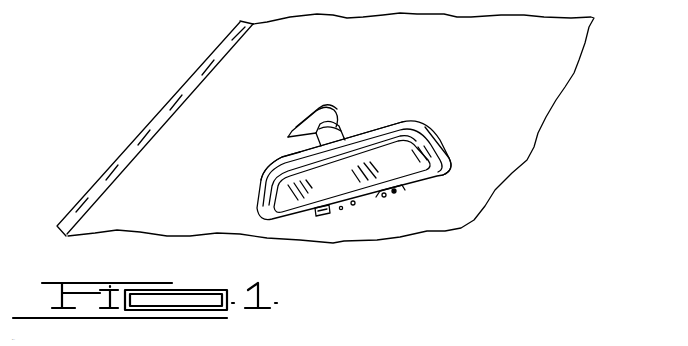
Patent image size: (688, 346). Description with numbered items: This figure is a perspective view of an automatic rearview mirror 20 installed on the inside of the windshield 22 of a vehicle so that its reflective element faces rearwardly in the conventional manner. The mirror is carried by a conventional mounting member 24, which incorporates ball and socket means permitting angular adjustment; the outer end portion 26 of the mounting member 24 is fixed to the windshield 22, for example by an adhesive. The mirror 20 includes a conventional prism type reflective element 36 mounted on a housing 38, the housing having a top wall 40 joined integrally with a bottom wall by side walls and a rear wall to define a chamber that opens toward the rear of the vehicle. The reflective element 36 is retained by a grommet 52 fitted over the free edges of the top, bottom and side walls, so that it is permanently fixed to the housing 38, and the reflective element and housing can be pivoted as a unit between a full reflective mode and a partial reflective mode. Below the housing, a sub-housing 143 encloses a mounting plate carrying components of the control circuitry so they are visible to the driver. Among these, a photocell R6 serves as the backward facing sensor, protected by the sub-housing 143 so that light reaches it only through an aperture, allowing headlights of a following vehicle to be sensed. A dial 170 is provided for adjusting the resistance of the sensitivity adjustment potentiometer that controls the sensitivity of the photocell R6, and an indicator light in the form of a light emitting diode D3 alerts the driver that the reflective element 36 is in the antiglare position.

The windshield 22 is at (547, 60).
The automatic rearview mirror 20 is at (447, 128).
The housing 38 is at (401, 127).
The top wall 40 is at (282, 157).
The grommet 52 is at (457, 176).
The prism type reflective element 36 is at (285, 188).
The mounting member 24 is at (345, 128).
The outer end portion 26 is at (320, 110).
The dial 170 is at (323, 217).
The sub-housing 143 is at (342, 211).
The light emitting diode D3 is at (352, 206).
The photocell R6 is at (385, 198).